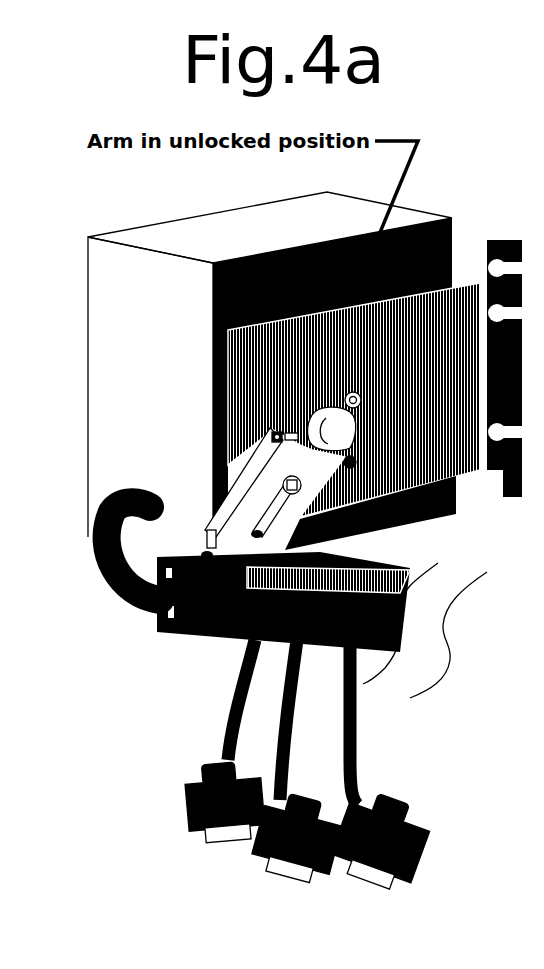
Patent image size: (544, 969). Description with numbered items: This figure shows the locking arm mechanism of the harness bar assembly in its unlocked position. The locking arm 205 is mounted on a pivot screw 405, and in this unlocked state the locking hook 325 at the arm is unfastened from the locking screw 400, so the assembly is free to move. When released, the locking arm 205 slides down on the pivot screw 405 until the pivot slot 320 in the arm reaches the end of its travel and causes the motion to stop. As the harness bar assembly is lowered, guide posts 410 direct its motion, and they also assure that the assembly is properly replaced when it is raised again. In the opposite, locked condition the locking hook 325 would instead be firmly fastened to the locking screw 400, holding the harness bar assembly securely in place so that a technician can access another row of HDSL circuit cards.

The locking arm 205 is at (253, 462).
The pivot slot 320 is at (255, 507).
The locking hook 325 is at (343, 432).
The locking screw 400 is at (364, 394).
The pivot screw 405 is at (300, 493).
The guide posts 410 is at (273, 428).